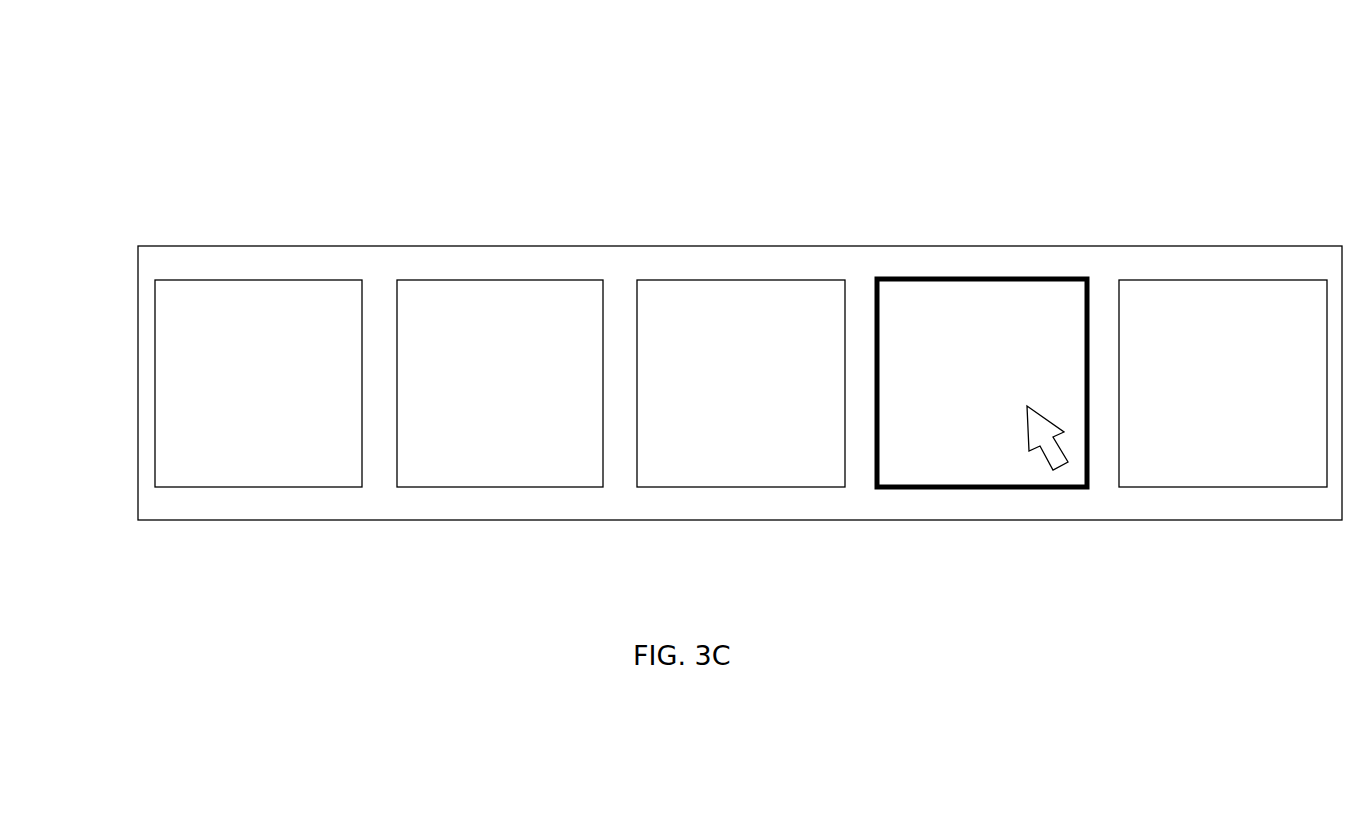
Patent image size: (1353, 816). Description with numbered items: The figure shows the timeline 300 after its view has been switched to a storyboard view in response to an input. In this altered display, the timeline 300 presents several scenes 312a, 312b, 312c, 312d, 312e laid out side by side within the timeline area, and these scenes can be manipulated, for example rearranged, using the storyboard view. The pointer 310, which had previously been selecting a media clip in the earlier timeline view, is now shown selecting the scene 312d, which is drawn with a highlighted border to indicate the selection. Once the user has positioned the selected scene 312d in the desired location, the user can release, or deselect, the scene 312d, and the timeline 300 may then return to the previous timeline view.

The timeline 300 is at (219, 118).
The scene 312a is at (275, 280).
The scene 312b is at (512, 280).
The scene 312c is at (762, 280).
The scene 312d is at (1003, 278).
The scene 312e is at (1243, 278).
The pointer 310 is at (1060, 466).